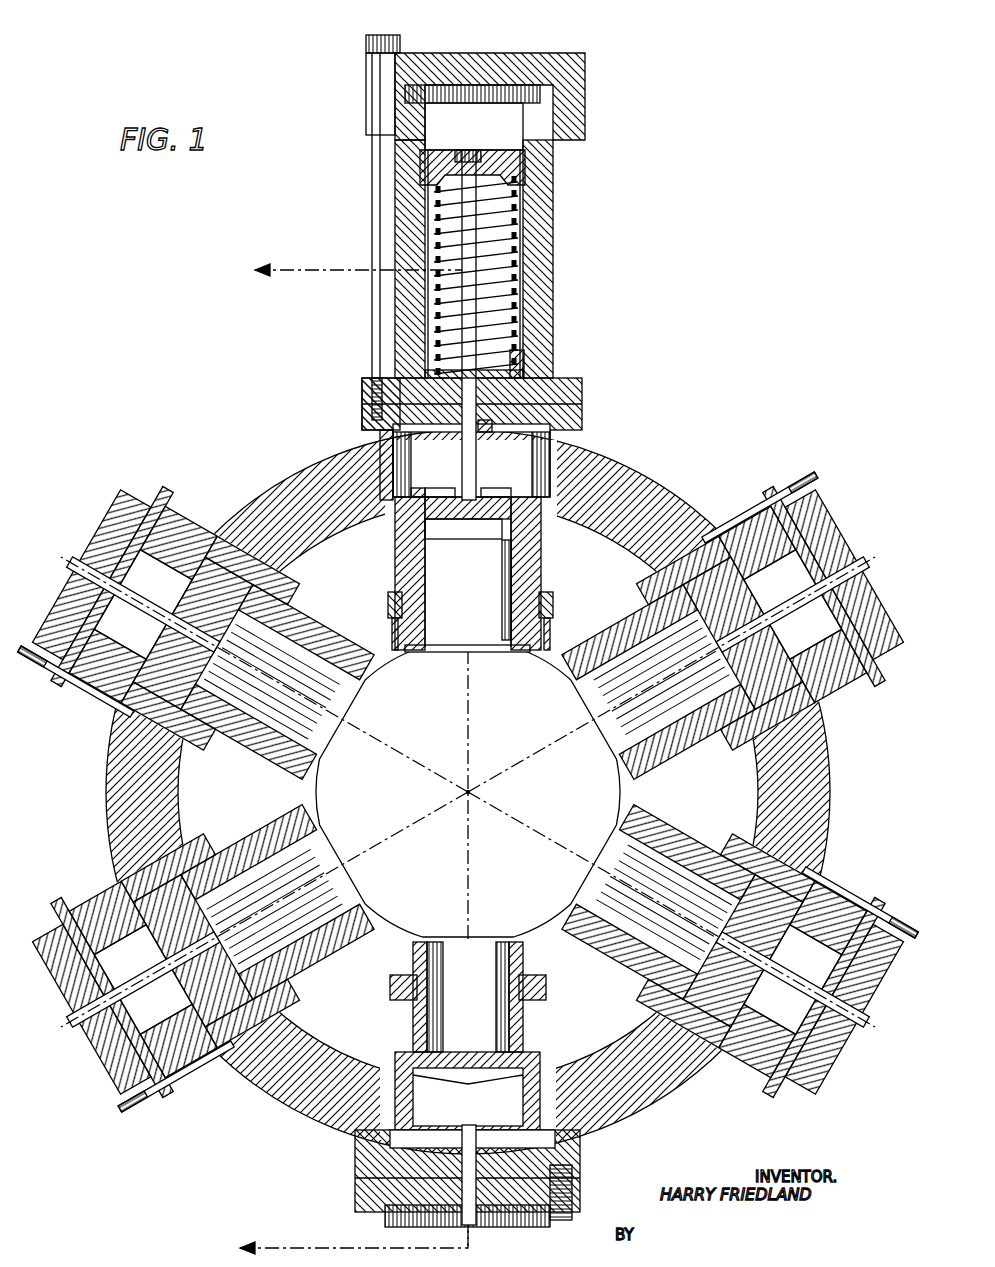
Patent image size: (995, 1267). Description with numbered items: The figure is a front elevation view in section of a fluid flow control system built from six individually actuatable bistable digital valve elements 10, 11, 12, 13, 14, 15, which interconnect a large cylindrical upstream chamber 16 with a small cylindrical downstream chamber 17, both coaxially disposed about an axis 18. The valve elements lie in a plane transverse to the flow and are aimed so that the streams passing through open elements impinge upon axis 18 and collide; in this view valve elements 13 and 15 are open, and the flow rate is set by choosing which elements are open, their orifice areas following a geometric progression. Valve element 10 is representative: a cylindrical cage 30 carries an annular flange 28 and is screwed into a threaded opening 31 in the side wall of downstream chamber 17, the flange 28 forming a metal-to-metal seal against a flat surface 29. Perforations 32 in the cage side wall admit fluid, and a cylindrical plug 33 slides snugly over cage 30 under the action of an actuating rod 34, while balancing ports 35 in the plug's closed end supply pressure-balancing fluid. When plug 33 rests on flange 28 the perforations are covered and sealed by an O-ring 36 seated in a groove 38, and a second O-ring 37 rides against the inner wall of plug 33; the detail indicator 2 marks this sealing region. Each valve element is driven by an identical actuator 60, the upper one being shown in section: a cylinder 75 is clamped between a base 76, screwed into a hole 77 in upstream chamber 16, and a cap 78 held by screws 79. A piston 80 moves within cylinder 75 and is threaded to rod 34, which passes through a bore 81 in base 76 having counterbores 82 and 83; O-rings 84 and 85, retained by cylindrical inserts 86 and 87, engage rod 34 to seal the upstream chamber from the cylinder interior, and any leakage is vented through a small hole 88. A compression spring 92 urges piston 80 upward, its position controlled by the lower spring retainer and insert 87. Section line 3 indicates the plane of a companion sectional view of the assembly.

The piston 2 is at (500, 540).
The section line 3- 3 is at (343, 760).
The valve element 10 is at (474, 565).
The valve element 11 is at (672, 676).
The valve element 12 is at (667, 916).
The valve element 13 is at (492, 989).
The valve element 14 is at (274, 916).
The valve element 15 is at (274, 679).
The upstream chamber 16 is at (680, 540).
The downstream chamber 17 is at (570, 672).
The axis 18 is at (470, 792).
The annular flange 28 is at (392, 600).
The flat surface 29 is at (515, 590).
The cage 30 is at (427, 620).
The threaded opening 31 is at (427, 652).
The perforations 32 is at (468, 520).
The plug 33 is at (400, 520).
The actuating rod 34 is at (480, 478).
The balancing ports 35 is at (455, 470).
The O-ring 36 is at (392, 600).
The O-ring 37 is at (530, 515).
The groove 38 is at (412, 492).
The actuator 60 is at (72, 562).
The cylinder 75 is at (553, 198).
The base 76 is at (362, 400).
The hole 77 is at (385, 500).
The cap 78 is at (510, 53).
The screw 79 is at (385, 35).
The piston 80 is at (443, 152).
The bore 81 is at (462, 400).
The counterbore 82 is at (490, 428).
The counterbore 83 is at (524, 358).
The O-ring 84 is at (440, 428).
The O-ring 85 is at (392, 378).
The cylindrical insert 86 is at (423, 461).
The cylindrical insert 87 is at (523, 374).
The small hole 88 is at (582, 410).
The compression spring 92 is at (520, 250).